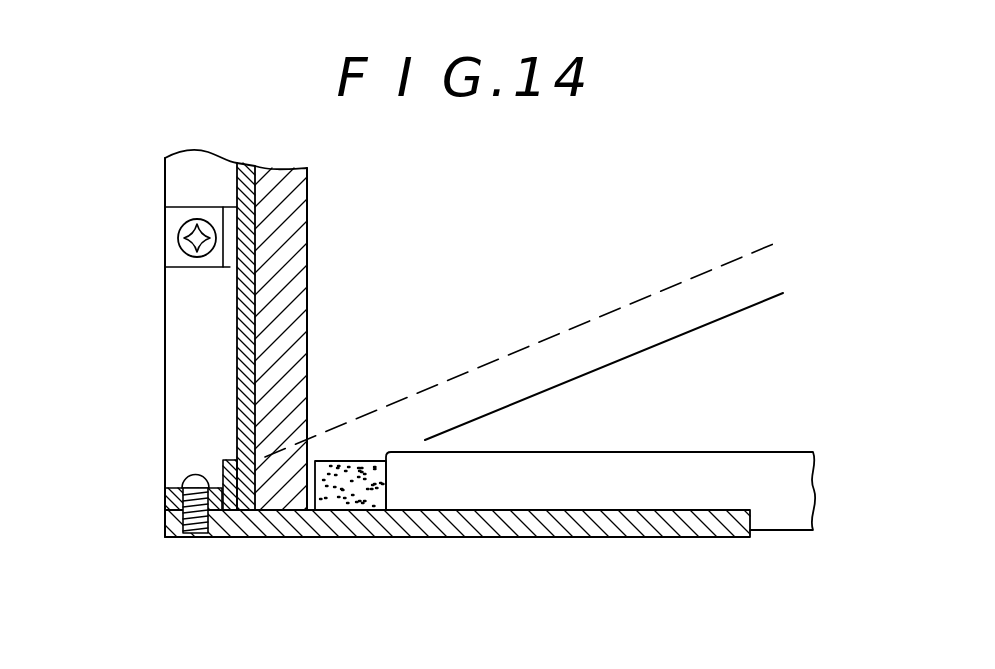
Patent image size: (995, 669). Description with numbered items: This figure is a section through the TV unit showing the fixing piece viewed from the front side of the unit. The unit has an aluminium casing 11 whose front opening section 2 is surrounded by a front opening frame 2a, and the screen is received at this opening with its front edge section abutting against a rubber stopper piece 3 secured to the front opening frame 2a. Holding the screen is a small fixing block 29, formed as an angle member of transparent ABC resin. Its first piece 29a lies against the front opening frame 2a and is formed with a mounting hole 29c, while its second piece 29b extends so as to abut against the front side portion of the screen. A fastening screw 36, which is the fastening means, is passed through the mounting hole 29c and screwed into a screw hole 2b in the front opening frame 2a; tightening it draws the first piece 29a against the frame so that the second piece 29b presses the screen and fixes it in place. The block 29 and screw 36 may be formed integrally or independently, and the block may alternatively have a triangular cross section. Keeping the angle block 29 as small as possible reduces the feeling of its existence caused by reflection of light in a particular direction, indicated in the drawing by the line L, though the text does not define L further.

The front opening section 2 is at (290, 538).
The front opening frame 2a is at (227, 538).
The screw hole 2b is at (190, 538).
The rubber stopper piece 3 is at (343, 497).
The casing 11 is at (665, 495).
The fixing block 29 is at (194, 203).
The first piece 29a is at (164, 221).
The second piece 29b is at (307, 211).
The mounting hole 29c is at (183, 488).
The fastening screw 36 is at (197, 268).
The optical path line L is at (673, 283).